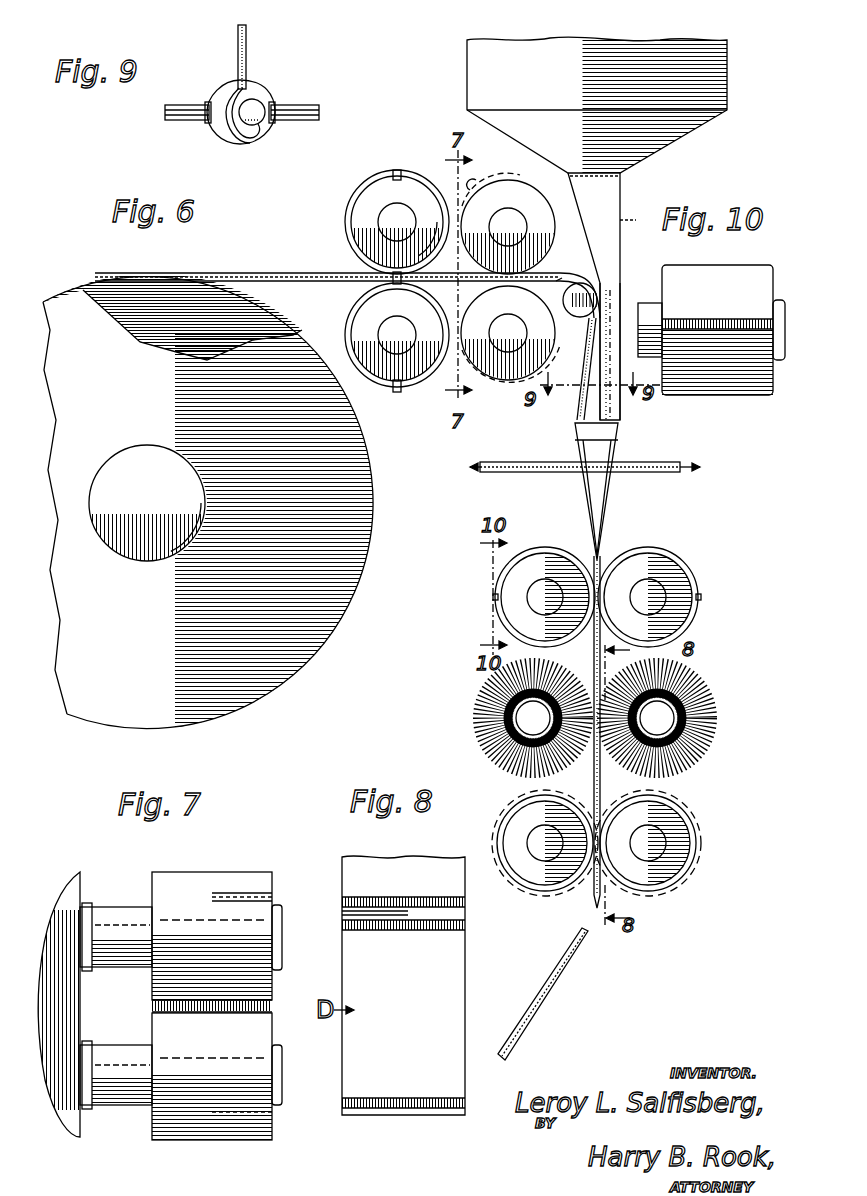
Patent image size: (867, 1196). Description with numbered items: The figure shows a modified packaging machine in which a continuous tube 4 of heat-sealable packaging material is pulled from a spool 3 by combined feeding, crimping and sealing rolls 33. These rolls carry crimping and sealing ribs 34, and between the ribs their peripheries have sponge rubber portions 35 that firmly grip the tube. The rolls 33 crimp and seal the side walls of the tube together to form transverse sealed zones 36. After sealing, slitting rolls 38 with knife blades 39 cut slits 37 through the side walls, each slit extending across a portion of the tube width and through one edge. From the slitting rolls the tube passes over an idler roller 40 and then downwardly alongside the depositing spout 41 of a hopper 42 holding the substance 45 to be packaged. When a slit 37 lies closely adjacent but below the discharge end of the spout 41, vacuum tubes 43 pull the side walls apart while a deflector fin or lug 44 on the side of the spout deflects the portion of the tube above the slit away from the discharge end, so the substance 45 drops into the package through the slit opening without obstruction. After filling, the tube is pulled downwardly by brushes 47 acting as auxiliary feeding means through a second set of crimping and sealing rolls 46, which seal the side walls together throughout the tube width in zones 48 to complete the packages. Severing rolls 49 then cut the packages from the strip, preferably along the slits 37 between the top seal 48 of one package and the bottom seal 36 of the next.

In FIG. 6, the spool 3 is at (350, 606).
In FIG. 9, the tube 4 is at (250, 50).
In FIG. 6, the tube 4 is at (212, 272).
In FIG. 6, the combined feeding, crimping and sealing rolls 33 is at (366, 206).
In FIG. 6, the crimping and sealing ribs 34 is at (397, 170).
In FIG. 6, the sponge rubber portions 35 is at (345, 226).
In FIG. 6, the transverse sealed zones 36 is at (560, 280).
In FIG. 7, the transverse sealed zones 36 is at (212, 1006).
In FIG. 8, the transverse sealed zones 36 is at (342, 900).
In FIG. 6, the slits 37 is at (578, 424).
In FIG. 8, the slits 37 is at (345, 913).
In FIG. 6, the slitting rolls 38 is at (522, 206).
In FIG. 7, the slitting rolls 38 is at (228, 880).
In FIG. 6, the knife blades 39 is at (466, 192).
In FIG. 7, the knife blades 39 is at (262, 895).
In FIG. 6, the idler roller 40 is at (622, 285).
In FIG. 9, the depositing spout 41 is at (262, 100).
In FIG. 6, the depositing spout 41 is at (620, 406).
In FIG. 6, the hopper 42 is at (710, 80).
In FIG. 9, the vacuum tubes 43 is at (200, 124).
In FIG. 6, the vacuum tubes 43 is at (560, 462).
In FIG. 9, the deflector fin or lug 44 is at (236, 138).
In FIG. 6, the deflector fin or lug 44 is at (590, 385).
In FIG. 6, the substance 45 is at (622, 437).
In FIG. 6, the second set of crimping and sealing rolls 46 is at (672, 580).
In FIG. 10, the second set of crimping and sealing rolls 46 is at (760, 396).
In FIG. 6, the brushes 47 is at (715, 725).
In FIG. 6, the zones 48 is at (588, 931).
In FIG. 8, the zones 48 is at (467, 925).
In FIG. 6, the severing rolls 49 is at (682, 843).